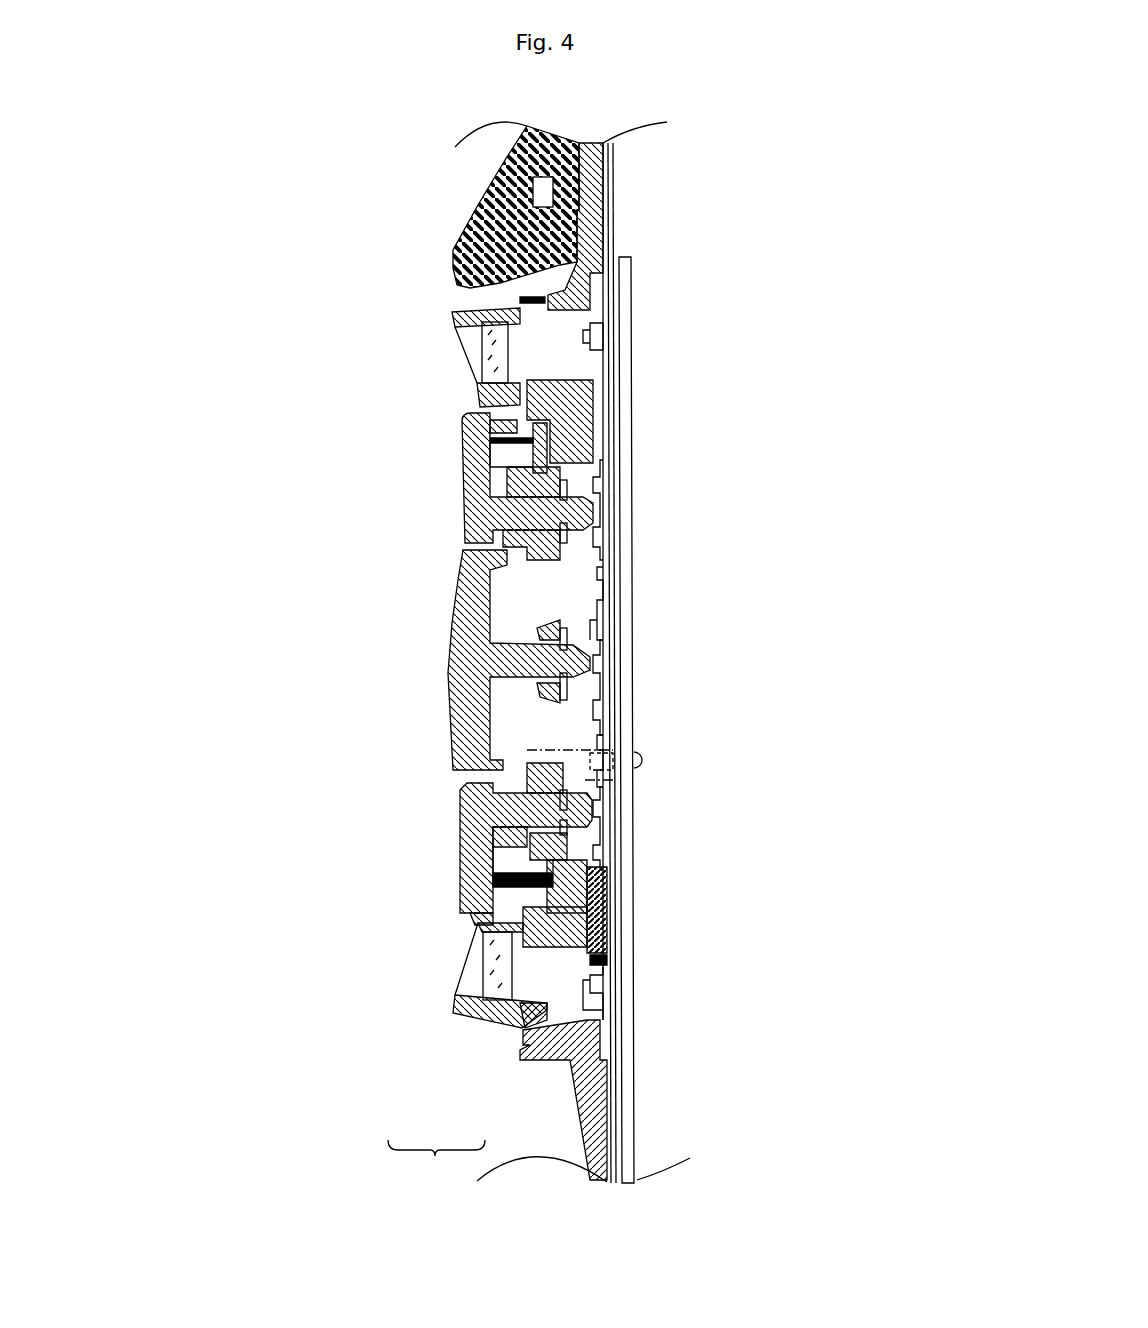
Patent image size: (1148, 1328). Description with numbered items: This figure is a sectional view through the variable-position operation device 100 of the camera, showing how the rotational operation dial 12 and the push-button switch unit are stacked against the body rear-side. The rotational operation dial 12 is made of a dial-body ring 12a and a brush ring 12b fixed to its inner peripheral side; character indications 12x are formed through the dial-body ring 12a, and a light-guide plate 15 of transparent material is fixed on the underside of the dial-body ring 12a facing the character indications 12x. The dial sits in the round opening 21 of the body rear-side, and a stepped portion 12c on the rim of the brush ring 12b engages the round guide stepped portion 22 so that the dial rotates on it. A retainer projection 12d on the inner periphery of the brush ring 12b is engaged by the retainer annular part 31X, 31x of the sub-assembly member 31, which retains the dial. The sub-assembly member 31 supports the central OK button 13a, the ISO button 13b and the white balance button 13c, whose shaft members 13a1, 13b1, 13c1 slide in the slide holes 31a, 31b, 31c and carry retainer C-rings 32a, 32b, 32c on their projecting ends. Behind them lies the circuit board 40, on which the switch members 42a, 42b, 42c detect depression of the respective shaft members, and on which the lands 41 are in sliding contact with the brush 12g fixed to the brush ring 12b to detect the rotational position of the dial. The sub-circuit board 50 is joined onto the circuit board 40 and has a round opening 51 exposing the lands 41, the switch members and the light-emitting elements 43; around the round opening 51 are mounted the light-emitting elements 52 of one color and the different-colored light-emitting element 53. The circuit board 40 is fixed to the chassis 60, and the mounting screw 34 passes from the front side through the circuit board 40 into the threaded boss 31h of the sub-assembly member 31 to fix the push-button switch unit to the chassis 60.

The variable-position operation device 100 is at (290, 487).
The different-colored light-emitting element 53 is at (497, 343).
The round guide stepped portion 22 is at (520, 299).
The light-guide plate 15 is at (487, 340).
The character indications 12x is at (470, 350).
The stepped portion 12c is at (485, 378).
The retainer annular part 31X is at (497, 430).
The retainer annular part 31x is at (490, 878).
The ISO button 13b is at (503, 463).
The brush ring 12b is at (513, 478).
The slide hole 31b is at (495, 500).
The sub-assembly member 31 is at (472, 663).
The central OK button 13a is at (480, 660).
The light-emitting elements 43 is at (597, 580).
The slide hole 31a is at (513, 670).
The white balance button 13c is at (470, 790).
The slide hole 31c is at (493, 803).
The retainer projection 12d is at (545, 870).
The lands 41 is at (540, 898).
The dial-body ring 12a is at (517, 1023).
The rotational operation dial 12 is at (436, 1160).
The light-emitting elements 52 is at (575, 1105).
The round opening 21 is at (603, 320).
The sub-circuit board 50 is at (607, 332).
The shaft member 13b1 is at (590, 500).
The switch member 42b is at (598, 513).
The retainer C-ring 32b is at (565, 545).
The shaft member 13a1 is at (565, 633).
The switch member 42a is at (597, 670).
The retainer C-ring 32a is at (565, 692).
The boss 31h is at (610, 755).
The mounting screw 34 is at (642, 760).
The shaft member 13c1 is at (595, 797).
The switch member 42c is at (600, 830).
The retainer C-ring 32c is at (567, 847).
The brush 12g is at (600, 915).
The round opening 51 is at (605, 960).
The circuit board 40 is at (614, 1045).
The chassis 60 is at (625, 1110).